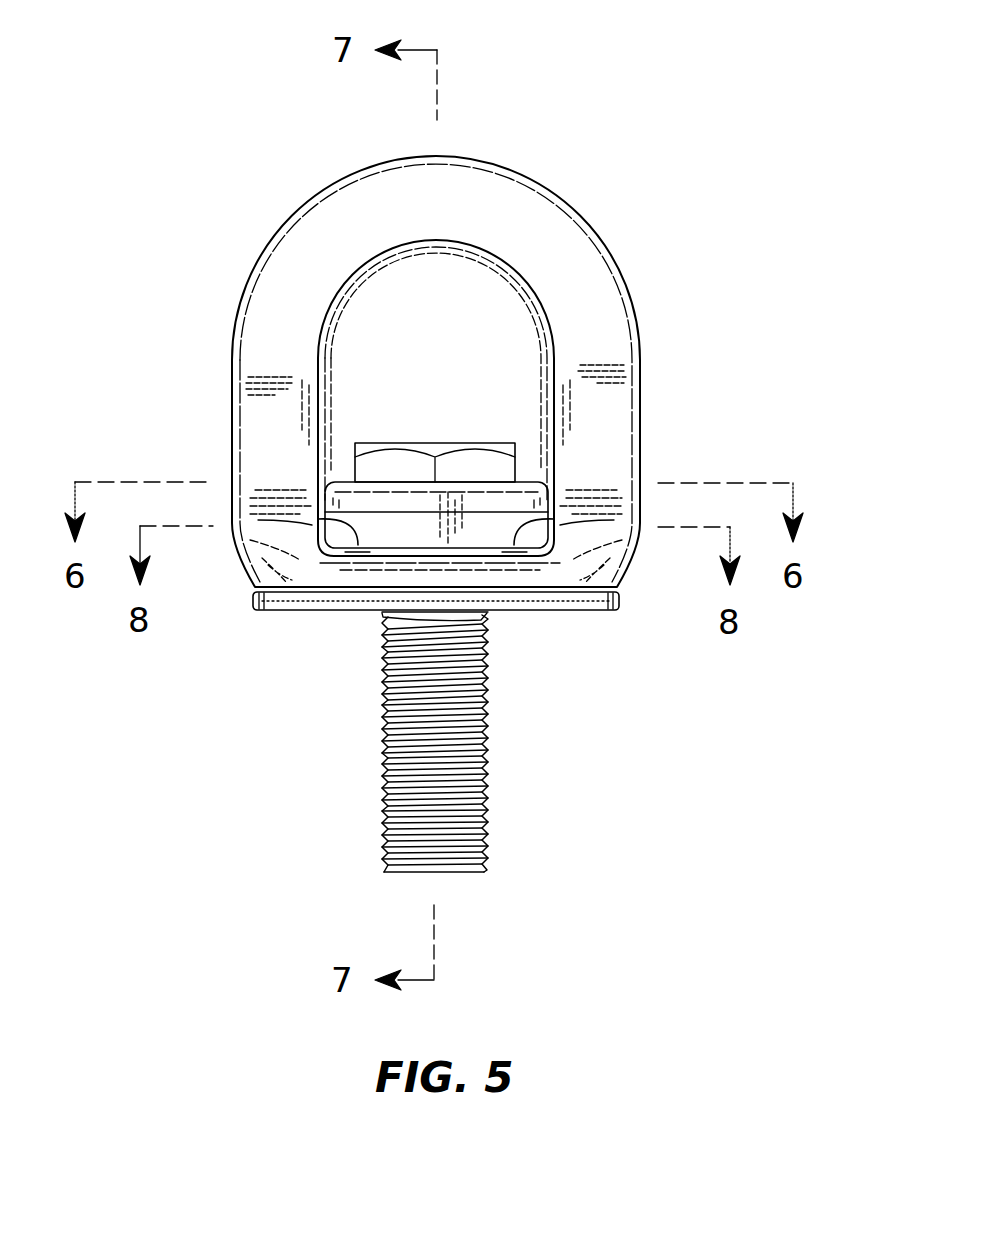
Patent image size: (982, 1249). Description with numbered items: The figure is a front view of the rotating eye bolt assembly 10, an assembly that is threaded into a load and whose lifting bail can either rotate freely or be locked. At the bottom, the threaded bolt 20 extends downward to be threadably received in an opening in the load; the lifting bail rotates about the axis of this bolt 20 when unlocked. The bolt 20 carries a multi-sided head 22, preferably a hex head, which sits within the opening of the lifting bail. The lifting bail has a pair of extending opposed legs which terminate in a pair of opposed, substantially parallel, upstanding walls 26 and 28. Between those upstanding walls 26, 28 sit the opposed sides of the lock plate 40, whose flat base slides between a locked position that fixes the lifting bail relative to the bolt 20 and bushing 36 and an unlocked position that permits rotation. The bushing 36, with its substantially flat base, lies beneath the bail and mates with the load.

The rotating eye bolt assembly 10 is at (605, 136).
The threaded bolt 20 is at (456, 765).
The multi-sided head 22 is at (396, 453).
The upstanding wall 26 is at (350, 549).
The upstanding wall 28 is at (522, 549).
The bushing 36 is at (620, 601).
The lock plate 40 is at (483, 497).